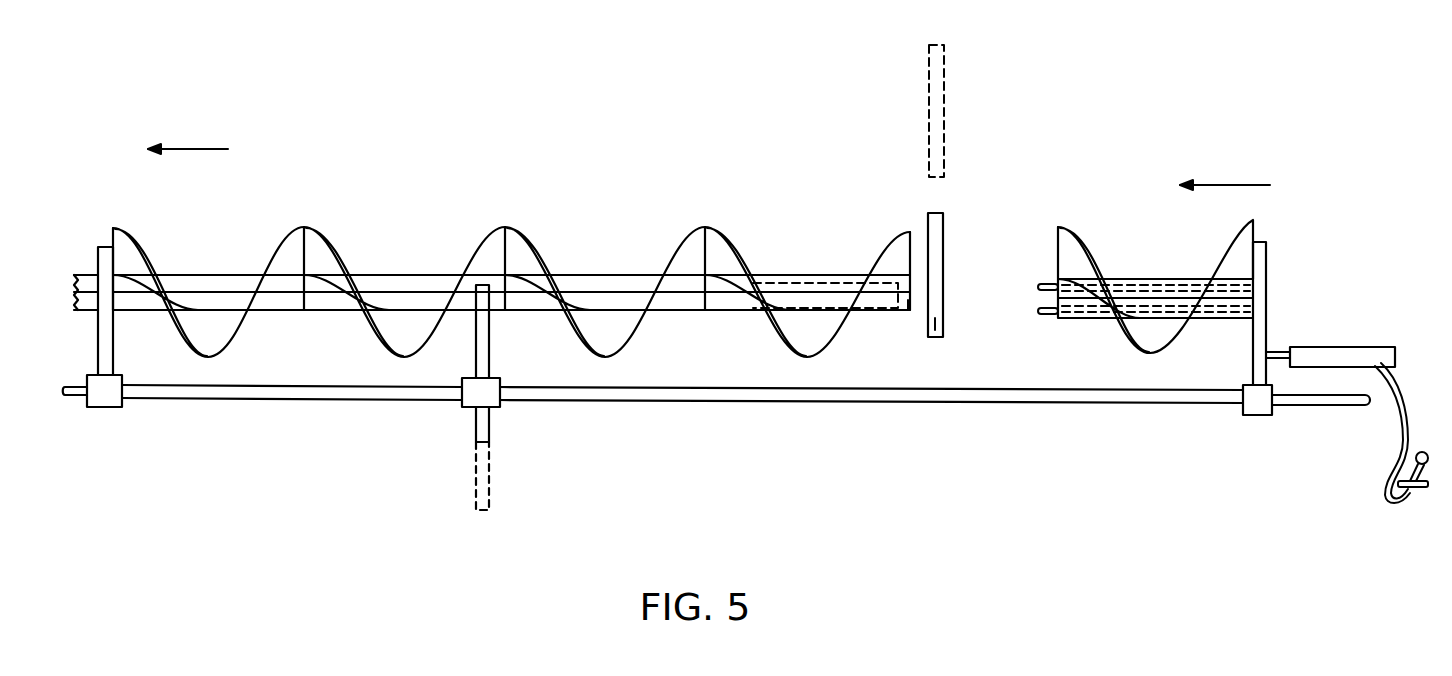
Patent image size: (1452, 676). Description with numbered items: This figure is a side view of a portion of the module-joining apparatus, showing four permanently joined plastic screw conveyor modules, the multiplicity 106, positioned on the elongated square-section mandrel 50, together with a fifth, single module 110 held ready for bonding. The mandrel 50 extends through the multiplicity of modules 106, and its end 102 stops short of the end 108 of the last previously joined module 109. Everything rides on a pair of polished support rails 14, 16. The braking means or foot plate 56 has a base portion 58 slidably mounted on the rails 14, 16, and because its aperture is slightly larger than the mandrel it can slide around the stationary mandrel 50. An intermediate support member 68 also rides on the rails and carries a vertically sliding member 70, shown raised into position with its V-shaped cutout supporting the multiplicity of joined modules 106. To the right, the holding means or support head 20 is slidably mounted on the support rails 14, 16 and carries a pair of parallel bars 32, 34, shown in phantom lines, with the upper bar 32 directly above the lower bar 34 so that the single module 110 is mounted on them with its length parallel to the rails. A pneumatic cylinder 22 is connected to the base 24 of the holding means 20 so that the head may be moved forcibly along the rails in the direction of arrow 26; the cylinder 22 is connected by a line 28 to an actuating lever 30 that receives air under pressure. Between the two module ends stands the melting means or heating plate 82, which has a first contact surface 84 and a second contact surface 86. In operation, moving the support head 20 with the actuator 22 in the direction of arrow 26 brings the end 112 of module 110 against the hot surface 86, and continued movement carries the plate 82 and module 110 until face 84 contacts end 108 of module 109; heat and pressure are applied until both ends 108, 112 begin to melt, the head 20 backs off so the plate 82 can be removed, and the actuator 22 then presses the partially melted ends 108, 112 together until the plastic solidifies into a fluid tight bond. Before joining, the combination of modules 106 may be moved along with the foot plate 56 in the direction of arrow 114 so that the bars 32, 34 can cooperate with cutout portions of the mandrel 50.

The support rail 14 is at (716, 421).
The support rail 16 is at (145, 393).
The holding means 20 is at (1268, 303).
The pneumatic cylinder 22 is at (1350, 352).
The base of holding means 24 is at (1243, 408).
The arrow 26 is at (1262, 185).
The line 28 is at (1395, 452).
The actuating lever 30 is at (1415, 488).
The bar 32 is at (1043, 283).
The bar 34 is at (1042, 315).
The mandrel 50 is at (90, 278).
The foot plate 56 is at (105, 258).
The base portion 58 is at (108, 400).
The intermediate support member 68 is at (466, 400).
The vertically sliding member 70 is at (485, 425).
The heating plate 82 is at (942, 122).
The first contact surface 84 is at (928, 223).
The second contact surface 86 is at (944, 229).
The end of mandrel 102 is at (898, 306).
The multiplicity of joined modules 106 is at (495, 243).
The end of module 108 is at (912, 300).
The last previously joined module 109 is at (889, 247).
The single module 110 is at (1073, 252).
The end of module 112 is at (1058, 291).
The arrow 114 is at (200, 149).